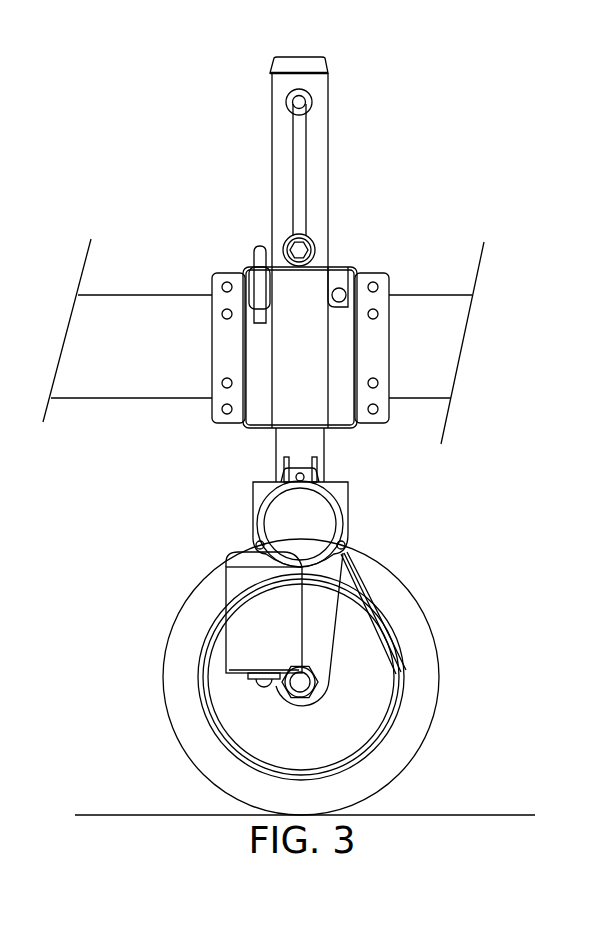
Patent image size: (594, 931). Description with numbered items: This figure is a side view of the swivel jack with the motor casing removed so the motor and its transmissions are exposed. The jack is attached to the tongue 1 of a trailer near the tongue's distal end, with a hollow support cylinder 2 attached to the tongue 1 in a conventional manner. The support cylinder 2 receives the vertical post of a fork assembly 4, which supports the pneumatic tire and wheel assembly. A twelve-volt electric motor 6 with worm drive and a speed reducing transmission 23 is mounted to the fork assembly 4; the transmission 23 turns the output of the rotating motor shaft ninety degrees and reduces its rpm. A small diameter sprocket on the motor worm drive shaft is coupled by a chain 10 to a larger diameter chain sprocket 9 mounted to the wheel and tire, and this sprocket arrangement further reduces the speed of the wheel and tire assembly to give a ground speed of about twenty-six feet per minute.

The tongue 1 is at (417, 313).
The hollow support cylinder 2 is at (305, 285).
The fork assembly 4 is at (348, 487).
The speed reducing transmission 23 is at (317, 521).
The electric motor 6 is at (242, 582).
The chain 10 is at (363, 587).
The larger diameter chain sprocket 9 is at (368, 687).